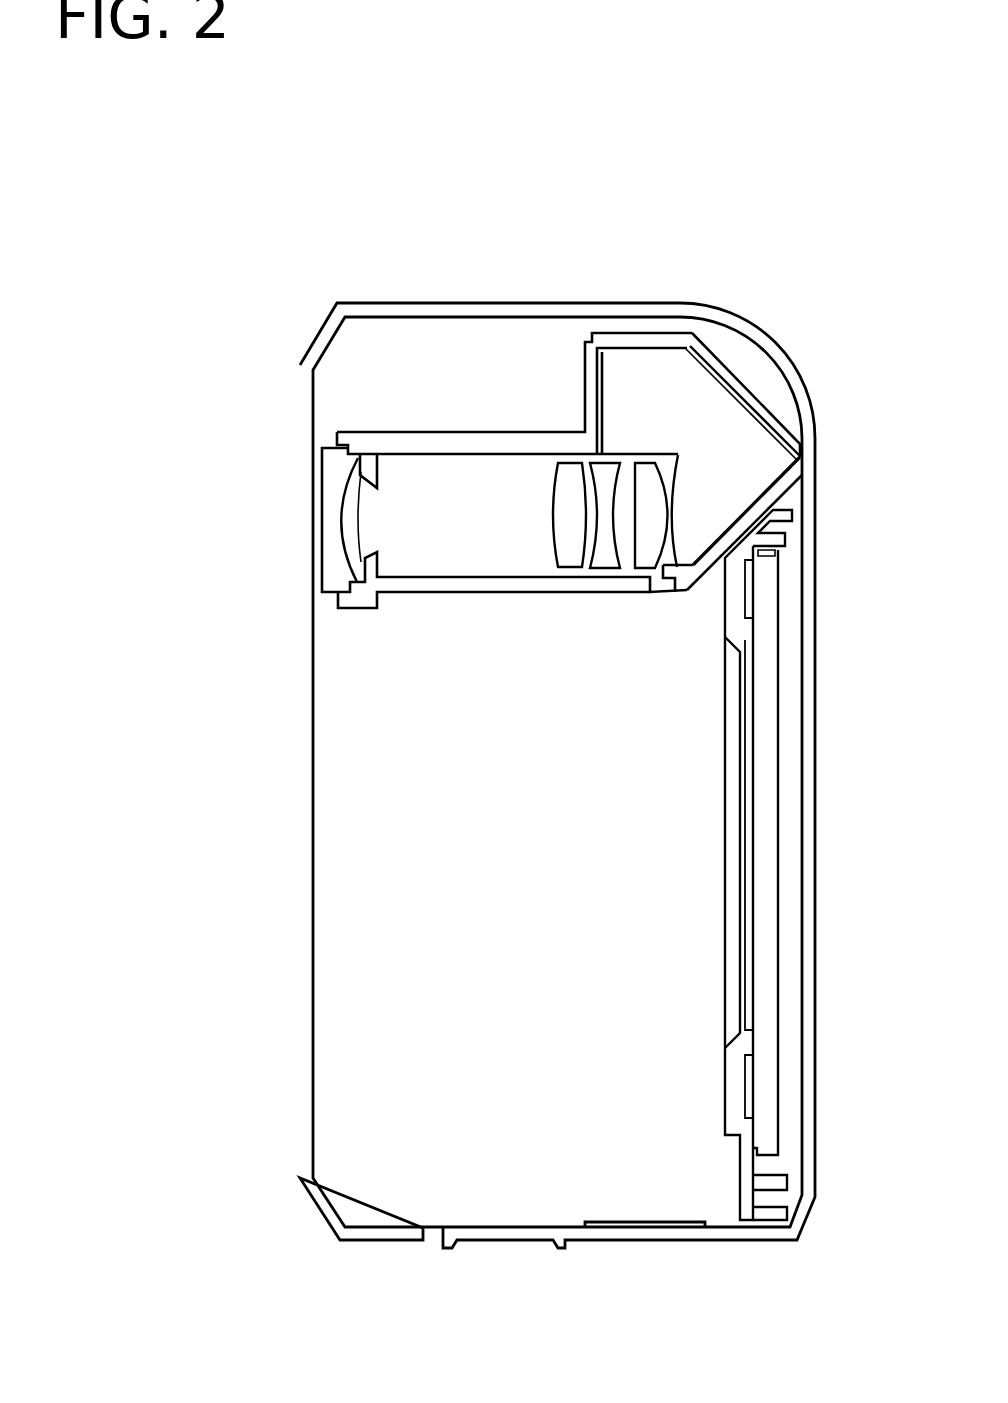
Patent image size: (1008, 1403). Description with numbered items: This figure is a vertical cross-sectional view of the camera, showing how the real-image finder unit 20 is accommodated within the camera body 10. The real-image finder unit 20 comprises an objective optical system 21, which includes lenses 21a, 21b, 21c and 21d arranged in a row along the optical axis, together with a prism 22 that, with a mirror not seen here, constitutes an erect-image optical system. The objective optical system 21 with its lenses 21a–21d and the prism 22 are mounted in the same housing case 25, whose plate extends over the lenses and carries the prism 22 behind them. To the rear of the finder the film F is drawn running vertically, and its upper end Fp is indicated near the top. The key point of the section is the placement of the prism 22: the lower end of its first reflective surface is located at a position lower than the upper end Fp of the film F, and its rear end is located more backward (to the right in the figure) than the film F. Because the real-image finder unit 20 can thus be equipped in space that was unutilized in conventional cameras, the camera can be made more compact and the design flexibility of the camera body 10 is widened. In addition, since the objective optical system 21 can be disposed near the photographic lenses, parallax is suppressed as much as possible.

The camera housing 10 is at (742, 298).
The real-image finder unit 20 is at (408, 428).
The objective optical system 21 is at (623, 613).
The lens 21a is at (345, 585).
The lens 21b is at (570, 560).
The lens 21c is at (607, 560).
The lens 21d is at (661, 580).
The prism 22 is at (725, 417).
The housing case 25 is at (627, 333).
The film F is at (755, 583).
The upper end of film Fp is at (757, 562).